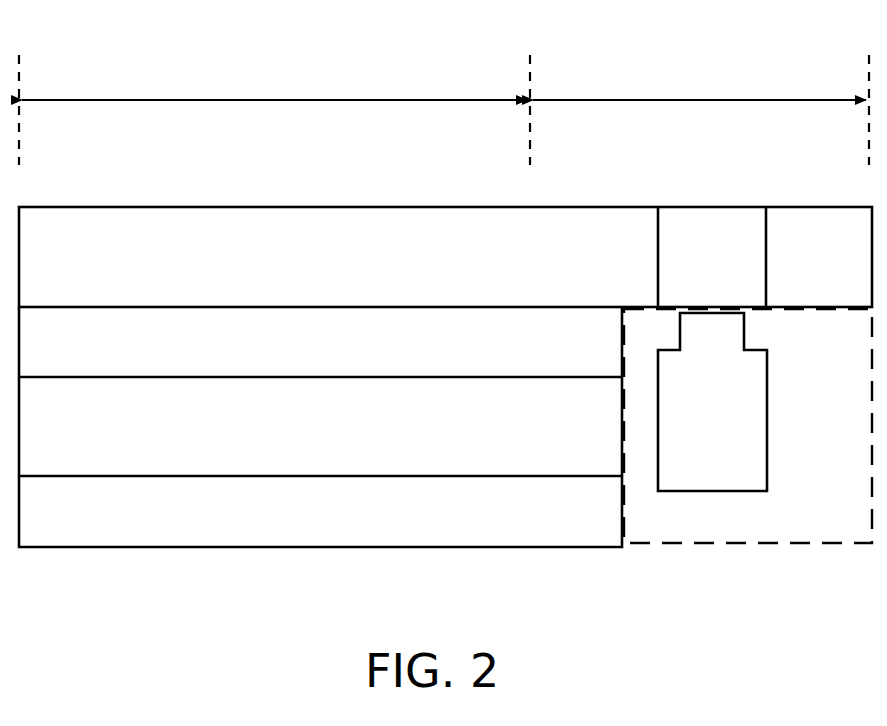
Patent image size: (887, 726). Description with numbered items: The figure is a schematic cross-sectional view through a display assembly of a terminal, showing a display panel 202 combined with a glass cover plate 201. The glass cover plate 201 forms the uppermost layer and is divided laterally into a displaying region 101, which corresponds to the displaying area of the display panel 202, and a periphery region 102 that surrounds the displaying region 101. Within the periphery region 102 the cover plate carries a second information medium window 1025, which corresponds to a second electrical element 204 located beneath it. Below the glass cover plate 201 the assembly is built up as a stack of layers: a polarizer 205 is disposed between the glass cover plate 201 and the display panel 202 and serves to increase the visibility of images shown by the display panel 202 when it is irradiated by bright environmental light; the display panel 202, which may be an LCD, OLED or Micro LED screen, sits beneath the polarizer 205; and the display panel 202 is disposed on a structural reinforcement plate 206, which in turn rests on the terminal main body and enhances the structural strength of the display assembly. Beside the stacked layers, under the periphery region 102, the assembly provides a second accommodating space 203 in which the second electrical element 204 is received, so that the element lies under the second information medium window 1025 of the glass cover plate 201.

The displaying region 101 is at (255, 98).
The periphery region 102 is at (684, 98).
The second information medium window 1025 is at (701, 188).
The glass cover plate 201 is at (297, 207).
The display panel 202 is at (377, 472).
The second accommodating space 203 is at (813, 544).
The second electrical element 204 is at (700, 492).
The polarizer 205 is at (537, 369).
The structural reinforcement plate 206 is at (217, 547).